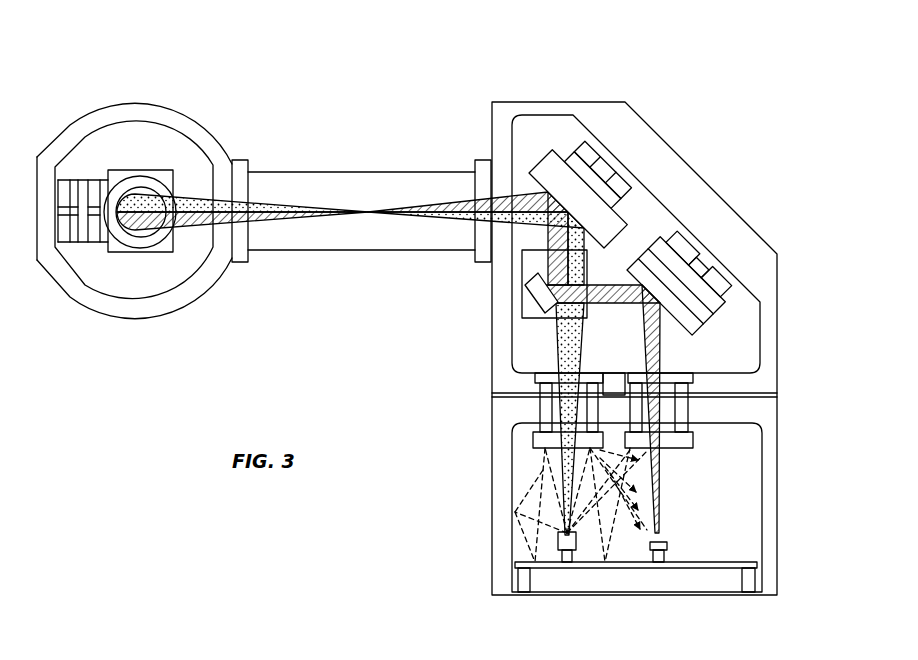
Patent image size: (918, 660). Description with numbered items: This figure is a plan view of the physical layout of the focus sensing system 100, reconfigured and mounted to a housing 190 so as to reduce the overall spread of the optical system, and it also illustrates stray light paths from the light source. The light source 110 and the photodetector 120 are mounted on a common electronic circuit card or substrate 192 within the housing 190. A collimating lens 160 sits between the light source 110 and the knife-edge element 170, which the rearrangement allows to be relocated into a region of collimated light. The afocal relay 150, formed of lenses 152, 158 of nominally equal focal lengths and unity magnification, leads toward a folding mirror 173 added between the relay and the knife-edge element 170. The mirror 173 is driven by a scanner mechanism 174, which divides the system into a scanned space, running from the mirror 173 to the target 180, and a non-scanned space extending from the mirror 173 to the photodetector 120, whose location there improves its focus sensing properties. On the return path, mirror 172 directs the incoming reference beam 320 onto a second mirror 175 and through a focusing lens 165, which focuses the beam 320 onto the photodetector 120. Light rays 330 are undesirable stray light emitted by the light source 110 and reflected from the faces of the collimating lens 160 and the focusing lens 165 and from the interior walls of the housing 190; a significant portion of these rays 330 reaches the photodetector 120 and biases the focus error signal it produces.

The focus sensing system 100 is at (764, 36).
The light source 110 is at (577, 545).
The photodetector 120 is at (670, 545).
The afocal relay 150 is at (332, 252).
The relay lens 152 is at (242, 263).
The relay lens 158 is at (482, 263).
The collimating lens 160 is at (535, 440).
The focusing lens 165 is at (693, 440).
The knife-edge element 170 is at (522, 300).
The mirror 172 is at (541, 314).
The folding mirror 173 is at (622, 226).
The scanner mechanism 174 is at (540, 160).
The second mirror 175 is at (697, 334).
The target 180 is at (142, 254).
The housing 190 is at (779, 326).
The electronic circuit card 192 is at (628, 568).
The incoming reference beam 320 is at (656, 348).
The stray light rays 330 is at (543, 470).